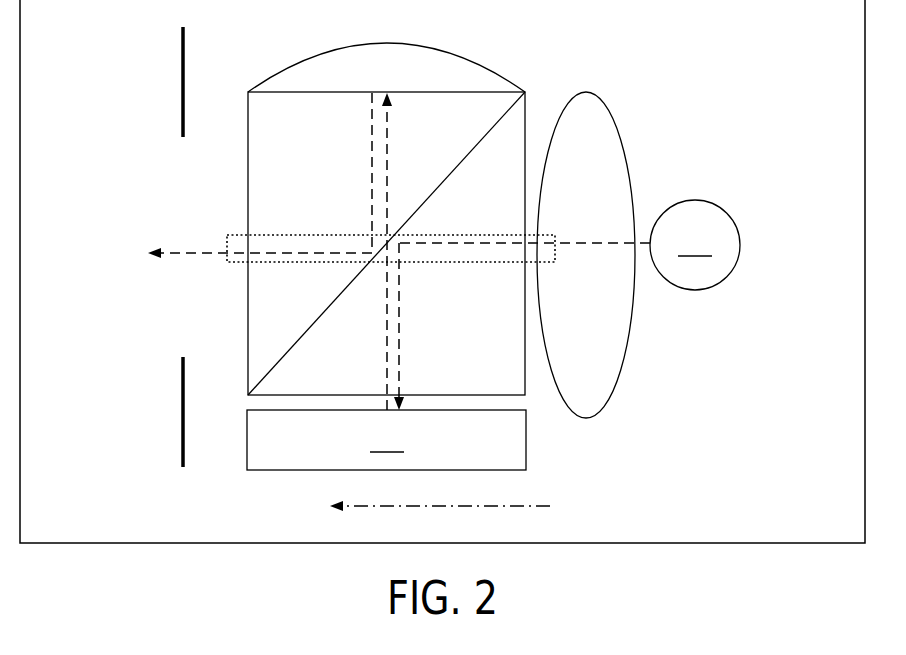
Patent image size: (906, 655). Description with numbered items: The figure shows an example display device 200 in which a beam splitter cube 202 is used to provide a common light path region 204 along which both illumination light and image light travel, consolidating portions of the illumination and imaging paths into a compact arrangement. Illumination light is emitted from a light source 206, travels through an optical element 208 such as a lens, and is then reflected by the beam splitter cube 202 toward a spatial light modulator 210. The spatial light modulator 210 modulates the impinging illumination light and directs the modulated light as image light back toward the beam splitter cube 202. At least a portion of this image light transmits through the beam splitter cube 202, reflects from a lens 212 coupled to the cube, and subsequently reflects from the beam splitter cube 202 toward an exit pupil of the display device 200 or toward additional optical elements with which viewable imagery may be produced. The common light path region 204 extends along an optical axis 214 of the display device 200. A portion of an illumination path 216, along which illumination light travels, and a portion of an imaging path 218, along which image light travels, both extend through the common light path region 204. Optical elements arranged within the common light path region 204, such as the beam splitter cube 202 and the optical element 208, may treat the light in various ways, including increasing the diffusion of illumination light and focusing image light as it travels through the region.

The display device 200 is at (704, 76).
The beam splitter cube 202 is at (247, 337).
The common light path region 204 is at (227, 235).
The light source 206 is at (695, 245).
The optical element 208 is at (634, 180).
The spatial light modulator 210 is at (386, 440).
The lens 212 is at (480, 62).
The optical axis 214 is at (550, 506).
The illumination path 216 is at (488, 256).
The imaging path 218 is at (326, 268).